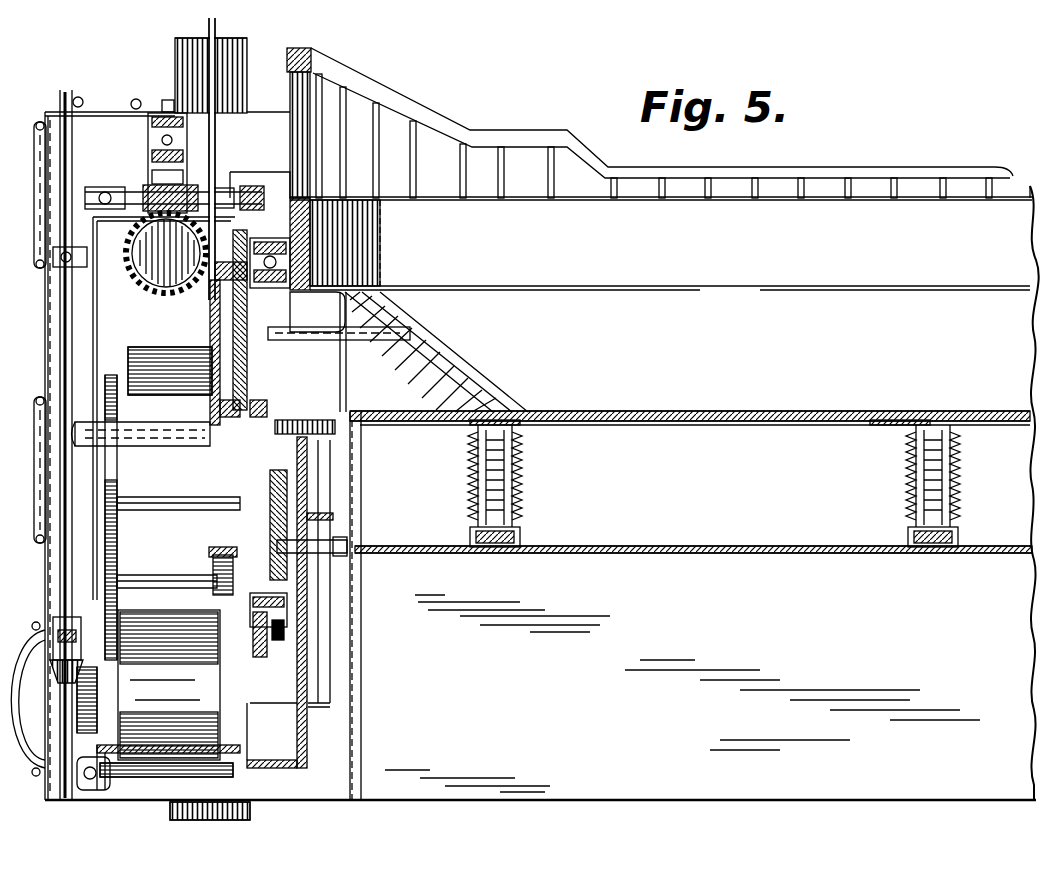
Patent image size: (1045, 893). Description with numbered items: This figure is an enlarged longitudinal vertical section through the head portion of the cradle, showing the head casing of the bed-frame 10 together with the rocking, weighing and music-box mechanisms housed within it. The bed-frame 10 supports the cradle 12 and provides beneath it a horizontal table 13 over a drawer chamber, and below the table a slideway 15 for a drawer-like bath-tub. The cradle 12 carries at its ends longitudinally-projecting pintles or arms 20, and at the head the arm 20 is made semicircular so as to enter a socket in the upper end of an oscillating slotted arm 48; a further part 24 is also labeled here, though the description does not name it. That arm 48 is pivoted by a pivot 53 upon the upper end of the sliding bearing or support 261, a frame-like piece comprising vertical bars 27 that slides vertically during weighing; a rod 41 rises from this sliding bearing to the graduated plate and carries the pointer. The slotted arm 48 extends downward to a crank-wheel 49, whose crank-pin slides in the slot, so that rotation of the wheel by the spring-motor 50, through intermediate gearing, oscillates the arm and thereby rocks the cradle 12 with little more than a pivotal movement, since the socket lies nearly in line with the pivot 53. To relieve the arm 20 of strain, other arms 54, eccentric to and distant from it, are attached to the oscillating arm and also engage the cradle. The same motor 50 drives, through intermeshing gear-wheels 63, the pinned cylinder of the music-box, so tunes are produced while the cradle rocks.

The bed-frame 10 is at (718, 554).
The cradle 12 is at (542, 424).
The horizontal table 13 is at (713, 423).
The slideway 15 is at (362, 655).
The pintles or pivots 20 is at (320, 272).
The bracket 24 is at (317, 312).
The vertical bars 27 is at (215, 397).
The rod 41 is at (216, 22).
The oscillating slotted arm 48 is at (262, 656).
The crank-wheel 49 is at (283, 630).
The motor 50 is at (169, 685).
The pivot 53 is at (290, 315).
The other arms 54 is at (395, 330).
The gear-wheels 63 is at (112, 500).
The sliding bearing or support 261 is at (232, 330).